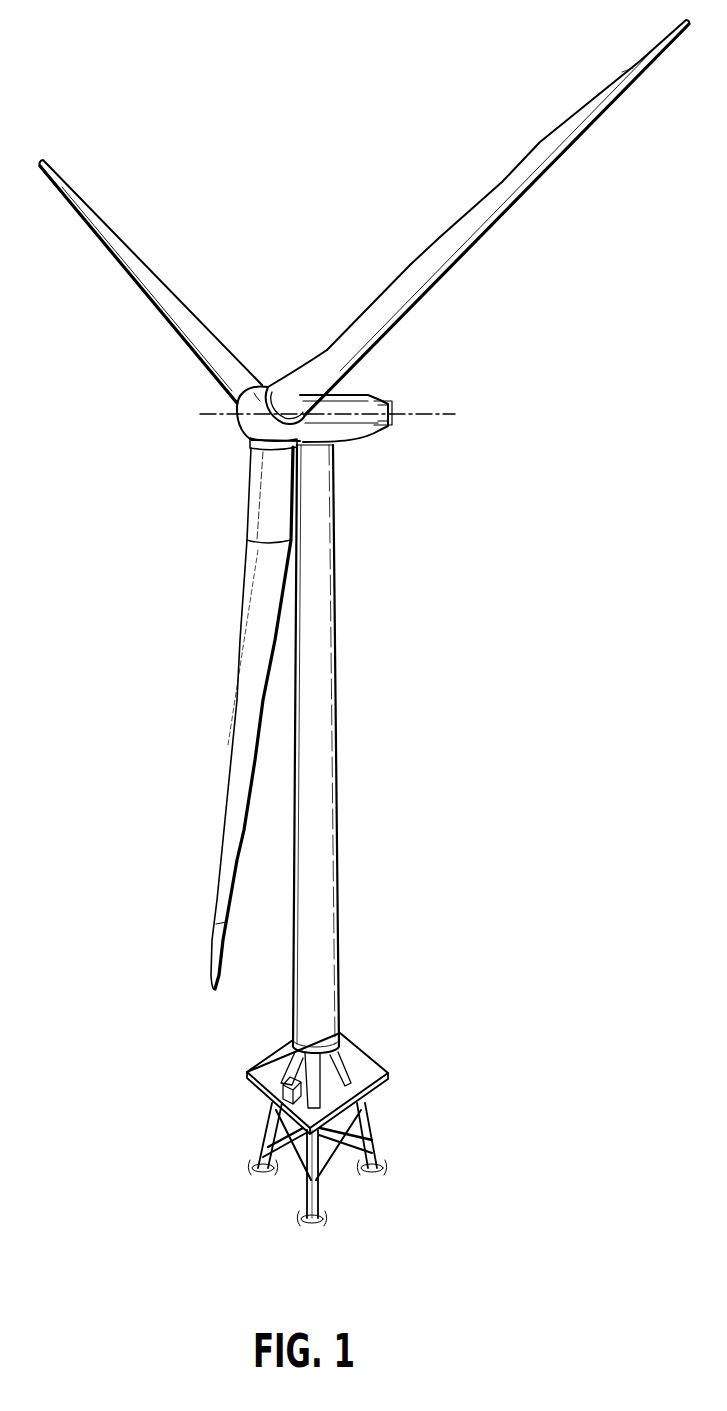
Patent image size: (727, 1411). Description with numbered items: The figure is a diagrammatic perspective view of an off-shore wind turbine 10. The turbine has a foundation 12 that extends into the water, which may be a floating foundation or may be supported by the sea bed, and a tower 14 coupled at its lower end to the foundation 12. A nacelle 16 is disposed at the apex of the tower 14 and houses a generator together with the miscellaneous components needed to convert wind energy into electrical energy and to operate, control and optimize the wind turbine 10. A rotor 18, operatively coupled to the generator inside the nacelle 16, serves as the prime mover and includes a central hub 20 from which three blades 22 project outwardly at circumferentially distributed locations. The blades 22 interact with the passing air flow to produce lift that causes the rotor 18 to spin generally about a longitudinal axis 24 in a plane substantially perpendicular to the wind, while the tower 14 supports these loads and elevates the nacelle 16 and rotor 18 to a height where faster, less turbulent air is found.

The off-shore wind turbine 10 is at (162, 150).
The foundation 12 is at (376, 1070).
The tower 14 is at (330, 702).
The nacelle 16 is at (352, 437).
The rotor 18 is at (226, 423).
The central hub 20 is at (260, 401).
The blade 22 is at (150, 305).
The longitudinal axis 24 is at (410, 413).